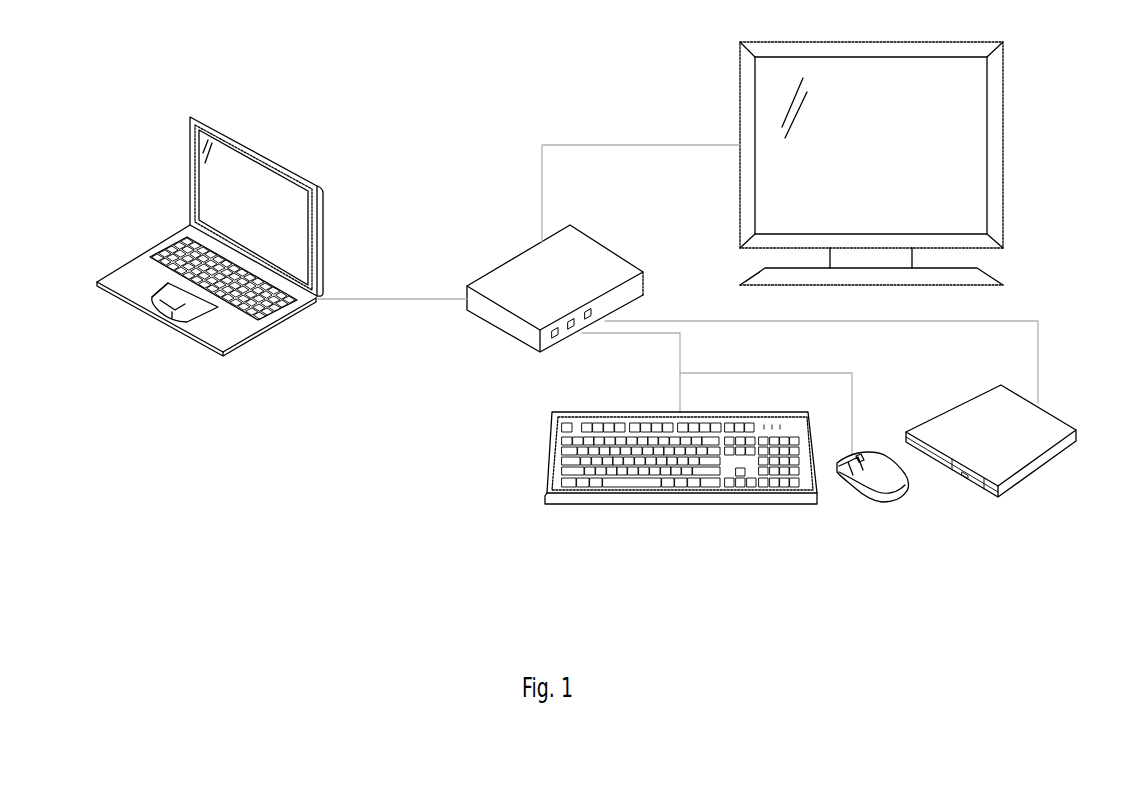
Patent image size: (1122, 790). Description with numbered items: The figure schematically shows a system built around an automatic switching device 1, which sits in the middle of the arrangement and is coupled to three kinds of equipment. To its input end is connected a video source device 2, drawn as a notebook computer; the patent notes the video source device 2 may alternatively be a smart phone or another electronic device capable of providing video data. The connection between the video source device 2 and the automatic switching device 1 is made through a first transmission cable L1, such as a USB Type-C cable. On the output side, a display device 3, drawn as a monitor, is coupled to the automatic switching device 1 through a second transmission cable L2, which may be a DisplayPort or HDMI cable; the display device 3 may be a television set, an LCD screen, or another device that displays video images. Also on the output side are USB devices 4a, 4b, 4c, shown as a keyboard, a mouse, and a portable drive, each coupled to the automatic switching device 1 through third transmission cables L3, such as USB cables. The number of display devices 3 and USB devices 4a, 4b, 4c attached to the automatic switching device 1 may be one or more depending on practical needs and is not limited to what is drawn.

The automatic switching device 1 is at (555, 291).
The video source device 2 is at (265, 226).
The display device 3 is at (907, 147).
The USB device 4a is at (682, 497).
The USB device 4b is at (883, 490).
The USB device 4c is at (1008, 444).
The first transmission cable L1 is at (392, 285).
The second transmission cable L2 is at (641, 178).
The third transmission cables L3 is at (810, 373).